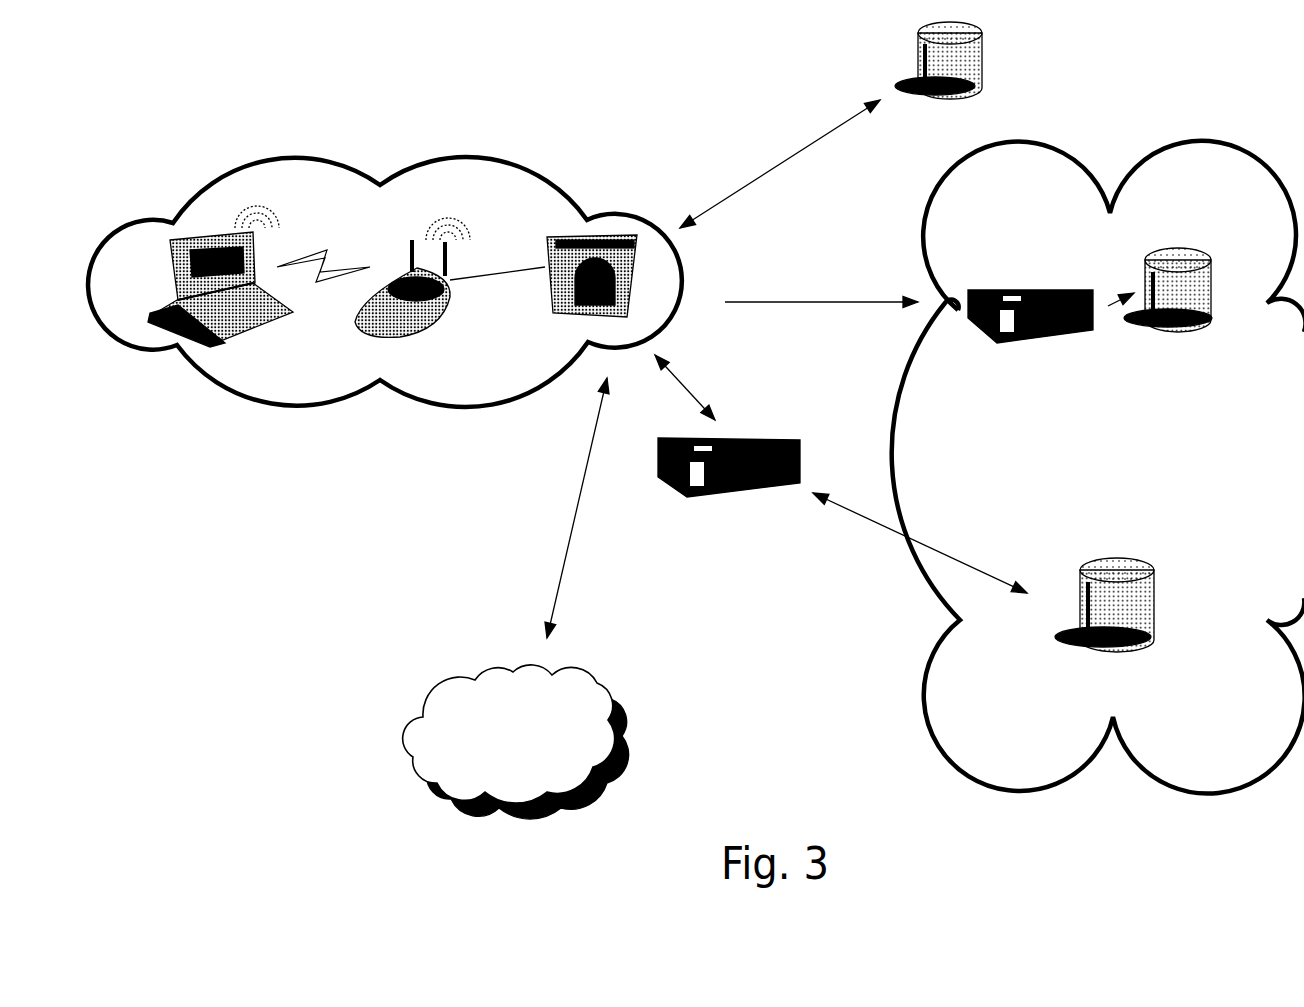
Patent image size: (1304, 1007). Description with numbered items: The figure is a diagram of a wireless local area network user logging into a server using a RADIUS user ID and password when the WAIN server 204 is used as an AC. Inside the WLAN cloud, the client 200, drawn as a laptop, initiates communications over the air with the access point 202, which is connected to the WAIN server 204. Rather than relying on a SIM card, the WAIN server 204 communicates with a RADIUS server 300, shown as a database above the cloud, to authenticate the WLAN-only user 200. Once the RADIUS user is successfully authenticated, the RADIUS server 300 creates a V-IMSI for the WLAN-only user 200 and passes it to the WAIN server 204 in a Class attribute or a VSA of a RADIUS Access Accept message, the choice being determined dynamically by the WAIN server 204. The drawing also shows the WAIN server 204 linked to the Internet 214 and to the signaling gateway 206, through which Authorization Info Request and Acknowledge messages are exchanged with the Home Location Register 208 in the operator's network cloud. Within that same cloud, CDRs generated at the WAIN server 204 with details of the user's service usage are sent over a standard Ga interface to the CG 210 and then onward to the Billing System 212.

The client 200 is at (220, 337).
The access point 202 is at (412, 343).
The WAIN server 204 is at (616, 230).
The signaling gateway 206 is at (729, 522).
The Home Location Register (HLR) 208 is at (1104, 633).
The CG 210 is at (1030, 349).
The Billing System 212 is at (1168, 326).
The Internet 214 is at (516, 742).
The RADIUS server 300 is at (938, 103).